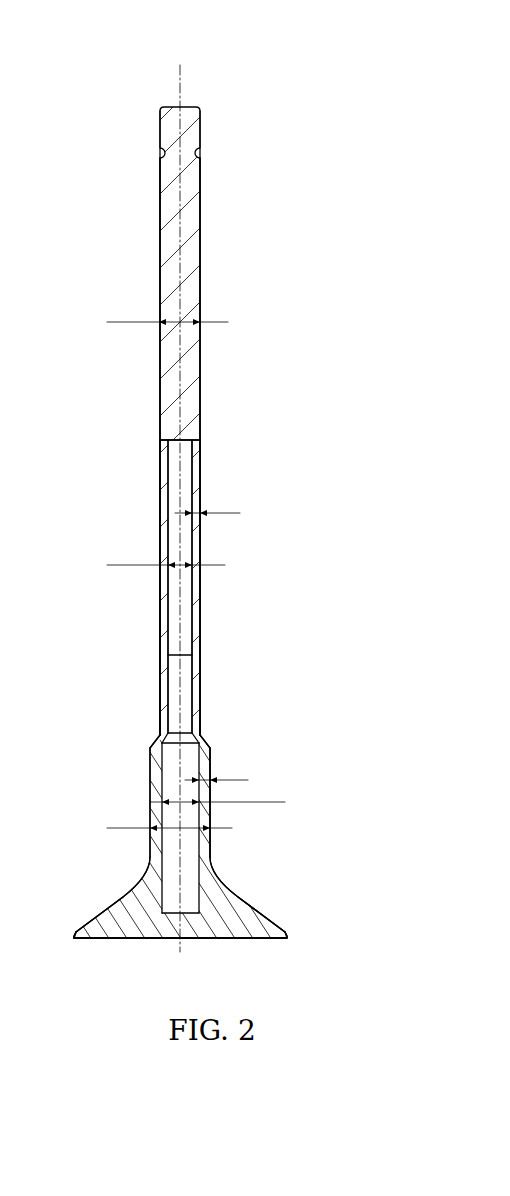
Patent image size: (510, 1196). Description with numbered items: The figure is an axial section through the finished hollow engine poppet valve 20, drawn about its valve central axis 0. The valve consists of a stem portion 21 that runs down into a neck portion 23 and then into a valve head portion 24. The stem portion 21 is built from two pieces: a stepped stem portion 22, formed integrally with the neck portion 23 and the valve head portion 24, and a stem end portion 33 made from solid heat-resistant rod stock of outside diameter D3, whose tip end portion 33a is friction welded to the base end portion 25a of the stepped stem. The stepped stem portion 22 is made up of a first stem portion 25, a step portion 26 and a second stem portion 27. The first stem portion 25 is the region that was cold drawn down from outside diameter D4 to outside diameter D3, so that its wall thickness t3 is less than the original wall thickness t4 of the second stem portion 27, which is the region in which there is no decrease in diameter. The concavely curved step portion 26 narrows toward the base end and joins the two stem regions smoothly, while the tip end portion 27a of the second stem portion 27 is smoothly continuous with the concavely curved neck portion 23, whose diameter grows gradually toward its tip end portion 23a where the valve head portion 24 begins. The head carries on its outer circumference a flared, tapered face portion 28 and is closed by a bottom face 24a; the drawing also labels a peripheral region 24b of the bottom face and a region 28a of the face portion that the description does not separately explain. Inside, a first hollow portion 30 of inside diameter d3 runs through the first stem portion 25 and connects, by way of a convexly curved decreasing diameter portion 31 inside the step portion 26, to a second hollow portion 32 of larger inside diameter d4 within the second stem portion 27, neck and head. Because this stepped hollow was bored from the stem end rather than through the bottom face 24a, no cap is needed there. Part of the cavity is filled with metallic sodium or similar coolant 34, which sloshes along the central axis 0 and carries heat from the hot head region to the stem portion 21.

The hollow engine poppet valve 20 is at (48, 40).
The central axis 0 is at (183, 76).
The stem portion 21 is at (205, 400).
The stepped stem portion 22 is at (358, 397).
The neck portion 23 is at (243, 896).
The tip end portion of neck portion 23a is at (272, 915).
The valve head portion 24 is at (290, 936).
The bottom face 24a is at (196, 938).
The outer edge of bottom face 24b is at (78, 941).
The first stem portion 25 is at (201, 456).
The base end portion of first stem portion 25a is at (161, 441).
The step portion 26 is at (203, 736).
The second stem portion 27 is at (214, 751).
The tip end portion of second stem portion 27a is at (212, 860).
The face portion 28 is at (285, 928).
The edge of outer peripheral face 28a is at (75, 932).
The first hollow portion 30 is at (175, 600).
The decreasing diameter portion 31 is at (165, 727).
The second hollow portion 32 is at (160, 856).
The stem end portion 33 is at (201, 347).
The tip end portion of stem end portion 33a is at (160, 462).
The coolant 34 is at (165, 672).
The outside diameter of first stem portion D3 is at (167, 309).
The inside diameter of first hollow portion d3 is at (166, 551).
The wall thickness of first stem portion t3 is at (208, 501).
The outside diameter of second stem portion D4 is at (167, 822).
The inside diameter of second hollow portion d4 is at (217, 790).
The wall thickness of second stem portion t4 is at (216, 768).